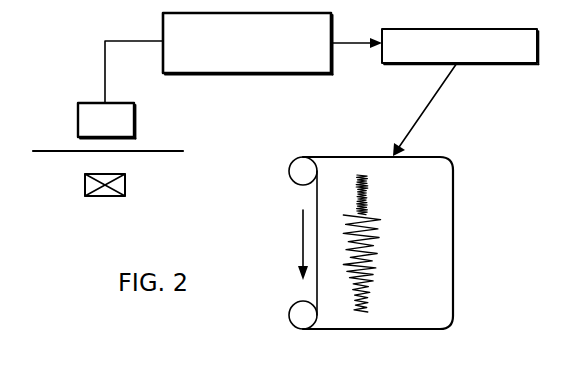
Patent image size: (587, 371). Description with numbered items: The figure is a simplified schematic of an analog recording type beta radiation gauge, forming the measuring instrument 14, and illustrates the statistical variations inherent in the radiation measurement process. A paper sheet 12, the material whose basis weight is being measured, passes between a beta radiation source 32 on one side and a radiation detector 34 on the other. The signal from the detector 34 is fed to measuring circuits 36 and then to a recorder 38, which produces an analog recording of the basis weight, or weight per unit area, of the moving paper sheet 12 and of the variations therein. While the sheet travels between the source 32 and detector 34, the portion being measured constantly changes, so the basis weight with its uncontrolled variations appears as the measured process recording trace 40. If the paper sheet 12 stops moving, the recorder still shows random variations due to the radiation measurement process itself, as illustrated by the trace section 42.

The paper sheet 12 is at (145, 151).
The measuring instrument 14 is at (92, 33).
The beta radiation source 32 is at (127, 187).
The radiation detector 34 is at (124, 114).
The measuring circuits 36 is at (296, 74).
The recorder 38 is at (429, 29).
The measured process recording trace 40 is at (395, 219).
The trace section 42 is at (395, 172).